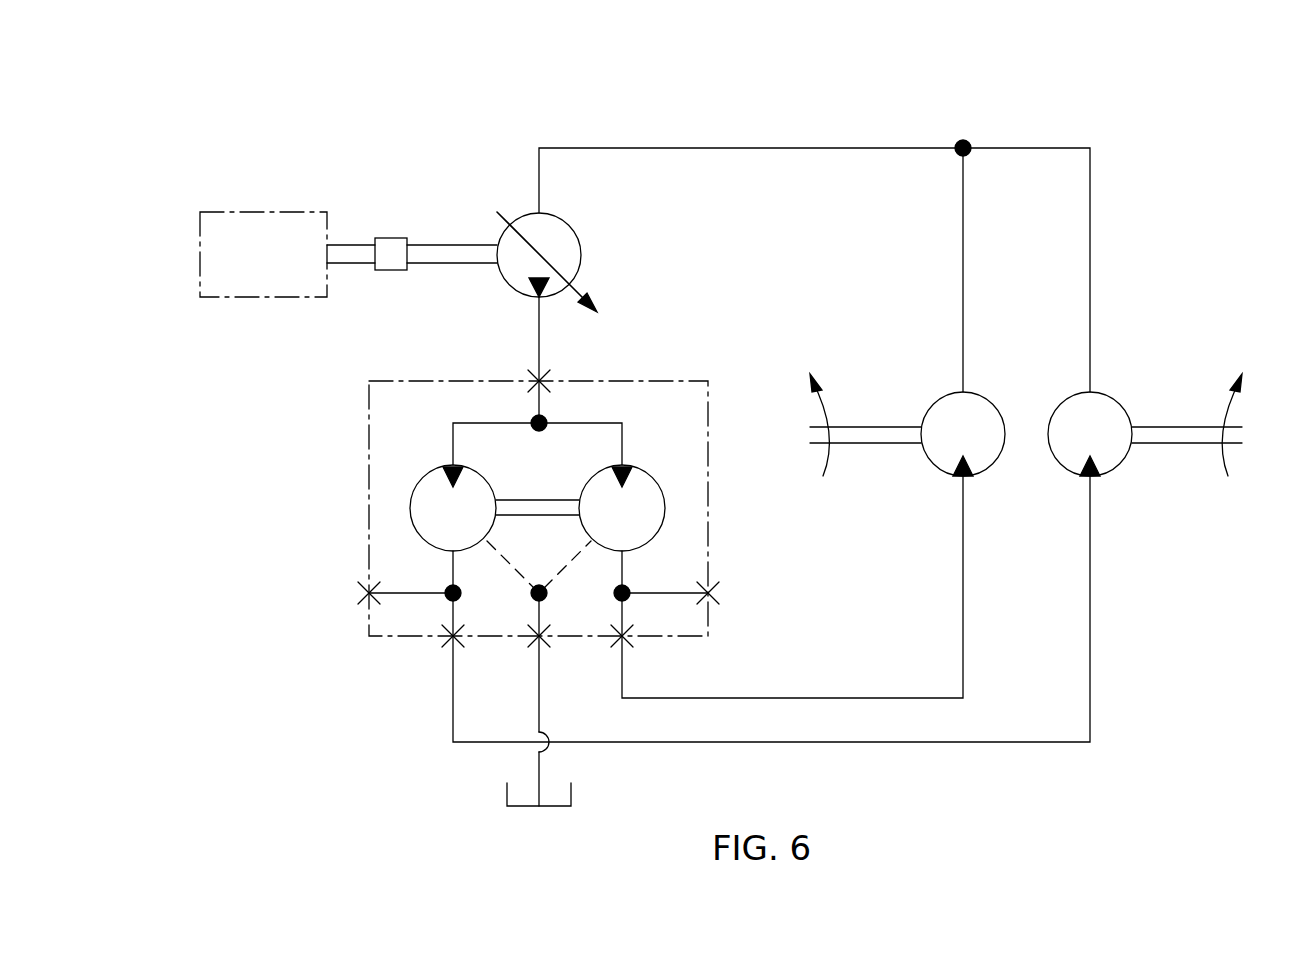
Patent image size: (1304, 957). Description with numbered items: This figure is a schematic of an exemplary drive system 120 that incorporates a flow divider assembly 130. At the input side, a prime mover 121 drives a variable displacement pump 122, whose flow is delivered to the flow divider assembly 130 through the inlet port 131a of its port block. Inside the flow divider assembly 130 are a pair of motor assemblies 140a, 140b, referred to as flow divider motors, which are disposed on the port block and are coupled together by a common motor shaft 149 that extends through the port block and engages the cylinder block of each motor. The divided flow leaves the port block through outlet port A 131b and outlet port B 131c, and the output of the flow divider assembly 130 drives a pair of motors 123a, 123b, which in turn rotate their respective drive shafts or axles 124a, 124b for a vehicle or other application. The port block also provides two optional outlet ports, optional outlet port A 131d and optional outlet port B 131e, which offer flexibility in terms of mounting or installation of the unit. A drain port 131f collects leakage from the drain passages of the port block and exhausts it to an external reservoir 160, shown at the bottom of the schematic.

The drive system 120 is at (272, 114).
The prime mover 121 is at (312, 212).
The variable displacement pump 122 is at (555, 215).
The motor 123a is at (1115, 402).
The motor 123b is at (932, 402).
The drive shaft or axle 124a is at (1170, 445).
The drive shaft or axle 124b is at (877, 445).
The flow divider assembly 130 is at (369, 405).
The inlet port 131a is at (545, 378).
The outlet port A 131b is at (450, 645).
The outlet port B 131c is at (626, 645).
The optional outlet port A 131d is at (365, 600).
The optional outlet port B 131e is at (712, 600).
The drain port 131f is at (542, 645).
The motor assembly 140a is at (437, 476).
The motor assembly 140b is at (638, 476).
The motor shaft 149 is at (538, 500).
The external reservoir 160 is at (507, 795).